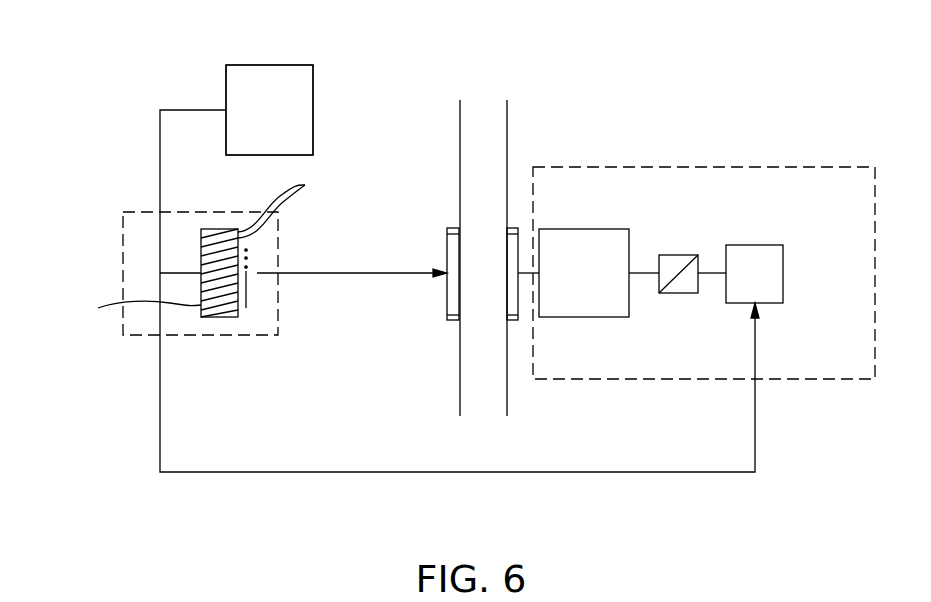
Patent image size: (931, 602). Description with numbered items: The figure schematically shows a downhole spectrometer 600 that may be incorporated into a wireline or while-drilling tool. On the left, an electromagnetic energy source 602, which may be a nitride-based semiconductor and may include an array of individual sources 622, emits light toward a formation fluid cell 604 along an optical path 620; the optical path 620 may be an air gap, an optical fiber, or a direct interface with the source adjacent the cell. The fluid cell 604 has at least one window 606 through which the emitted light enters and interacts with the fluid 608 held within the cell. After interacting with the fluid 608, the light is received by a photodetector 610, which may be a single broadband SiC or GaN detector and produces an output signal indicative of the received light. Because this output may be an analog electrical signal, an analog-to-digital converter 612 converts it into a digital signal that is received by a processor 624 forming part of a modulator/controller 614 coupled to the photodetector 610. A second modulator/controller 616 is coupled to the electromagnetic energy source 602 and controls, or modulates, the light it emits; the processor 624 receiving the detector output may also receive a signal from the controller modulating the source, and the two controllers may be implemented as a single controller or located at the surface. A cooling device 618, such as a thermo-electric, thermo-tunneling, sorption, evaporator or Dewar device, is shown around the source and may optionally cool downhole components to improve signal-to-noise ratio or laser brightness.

The downhole spectrometer 600 is at (320, 528).
The electromagnetic energy source 602 is at (221, 318).
The formation fluid cell 604 is at (508, 111).
The window 606 is at (447, 229).
The fluid 608 is at (487, 90).
The photodetector 610 is at (580, 318).
The analog-to-digital converter 612 is at (677, 255).
The modulator/controller 614 is at (753, 245).
The modulator/controller 616 is at (270, 65).
The cooling device 618 is at (122, 243).
The optical path 620 is at (360, 275).
The individual sources 622 is at (206, 246).
The processor 624 is at (300, 112).